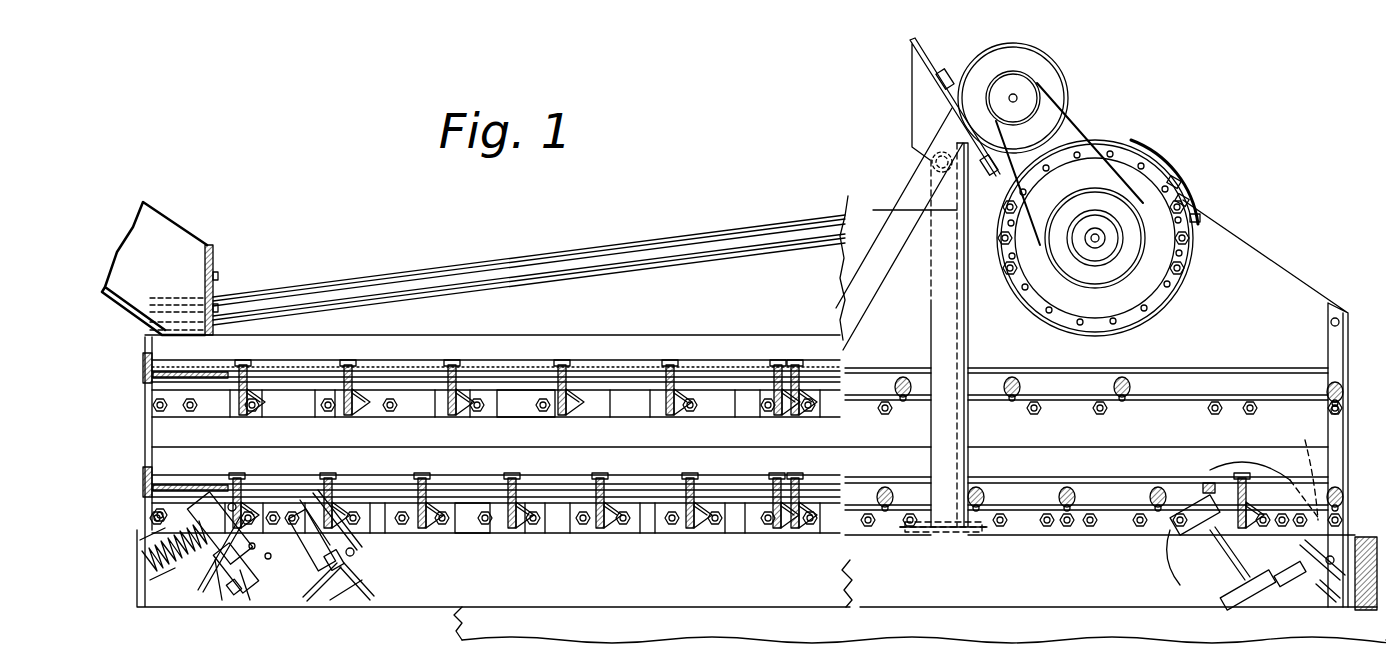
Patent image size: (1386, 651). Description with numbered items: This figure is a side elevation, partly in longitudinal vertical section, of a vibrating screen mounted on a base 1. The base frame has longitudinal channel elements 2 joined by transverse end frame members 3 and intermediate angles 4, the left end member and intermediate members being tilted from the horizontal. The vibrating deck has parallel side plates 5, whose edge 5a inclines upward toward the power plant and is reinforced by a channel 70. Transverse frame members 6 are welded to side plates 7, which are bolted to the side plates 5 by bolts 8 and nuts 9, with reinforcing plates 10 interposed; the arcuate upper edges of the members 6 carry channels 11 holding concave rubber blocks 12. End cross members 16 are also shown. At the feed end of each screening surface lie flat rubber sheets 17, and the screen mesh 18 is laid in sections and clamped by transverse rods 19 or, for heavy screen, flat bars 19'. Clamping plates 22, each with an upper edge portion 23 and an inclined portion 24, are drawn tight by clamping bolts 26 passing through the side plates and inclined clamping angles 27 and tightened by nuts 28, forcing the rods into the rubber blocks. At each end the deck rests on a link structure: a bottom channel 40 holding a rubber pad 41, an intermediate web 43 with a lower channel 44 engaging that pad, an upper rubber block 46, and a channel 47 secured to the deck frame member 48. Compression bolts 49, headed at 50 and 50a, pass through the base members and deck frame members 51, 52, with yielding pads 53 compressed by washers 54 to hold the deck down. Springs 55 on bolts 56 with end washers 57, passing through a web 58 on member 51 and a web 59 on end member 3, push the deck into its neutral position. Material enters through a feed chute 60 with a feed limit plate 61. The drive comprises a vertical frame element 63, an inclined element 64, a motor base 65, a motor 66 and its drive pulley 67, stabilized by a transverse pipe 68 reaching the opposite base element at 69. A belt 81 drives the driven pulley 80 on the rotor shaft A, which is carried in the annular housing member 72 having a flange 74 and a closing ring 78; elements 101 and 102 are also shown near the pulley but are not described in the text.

The base 1 is at (470, 622).
The channel elements 2 is at (441, 600).
The end frame members 3 is at (220, 596).
The intermediate angles 4 is at (355, 598).
The side plates 5 is at (570, 292).
The edge 5a is at (640, 254).
The transversely extending frame members 6 is at (240, 402).
The side plates 7 is at (160, 420).
The bolts 8 is at (153, 405).
The nuts 9 is at (190, 412).
The reinforcing plates 10 is at (520, 395).
The channels 11 is at (456, 364).
The rubber blocks 12 is at (365, 375).
The end cross members 16 is at (143, 372).
The rubber sheets 17 is at (205, 372).
The screen mesh 18 is at (500, 371).
The clamping rods 19 is at (834, 482).
The flat bar 19' is at (570, 356).
The clamping plates 22 is at (673, 346).
The upper edge portion 23 is at (600, 350).
The inclined portion 24 is at (710, 366).
The clamping bolts 26 is at (1128, 400).
The clamping angles 27 is at (1185, 370).
The nuts 28 is at (903, 398).
The bottom channel 40 is at (360, 580).
The rubber pad 41 is at (325, 600).
The intermediate web 43 is at (355, 553).
The lower channel 44 is at (328, 562).
The rubber block 46 is at (305, 520).
The channel 47 is at (338, 512).
The deck frame member 48 is at (320, 528).
The compression bolts 49 is at (203, 582).
The bolt head 50 is at (215, 512).
The bolt head 50a is at (248, 595).
The deck frame member 51 is at (235, 503).
The deck frame member 52 is at (1185, 548).
The yielding pads 53 is at (153, 516).
The washers 54 is at (246, 586).
The springs 55 is at (142, 545).
The bolts 56 is at (145, 560).
The end washers 57 is at (148, 578).
The web 58 is at (256, 546).
The web 59 is at (272, 556).
The feed chute 60 is at (135, 310).
The feed limit plate 61 is at (214, 262).
The vertical frame element 63 is at (945, 276).
The inclined element 64 is at (905, 182).
The motor base 65 is at (912, 60).
The motor 66 is at (990, 56).
The drive pulley 67 is at (1020, 92).
The transversely extending pipe 68 is at (935, 152).
The opposite base frame element connection 69 is at (930, 327).
The reinforcing channel 70 is at (495, 270).
The annular housing member 72 is at (1108, 142).
The flange 74 is at (1130, 160).
The plate or ring 78 is at (1170, 210).
The driven pulley 80 is at (1155, 190).
The belt structure 81 is at (1080, 140).
The clamp 101 is at (1190, 214).
The clamp 102 is at (1172, 186).
The rotor shaft A is at (1102, 240).